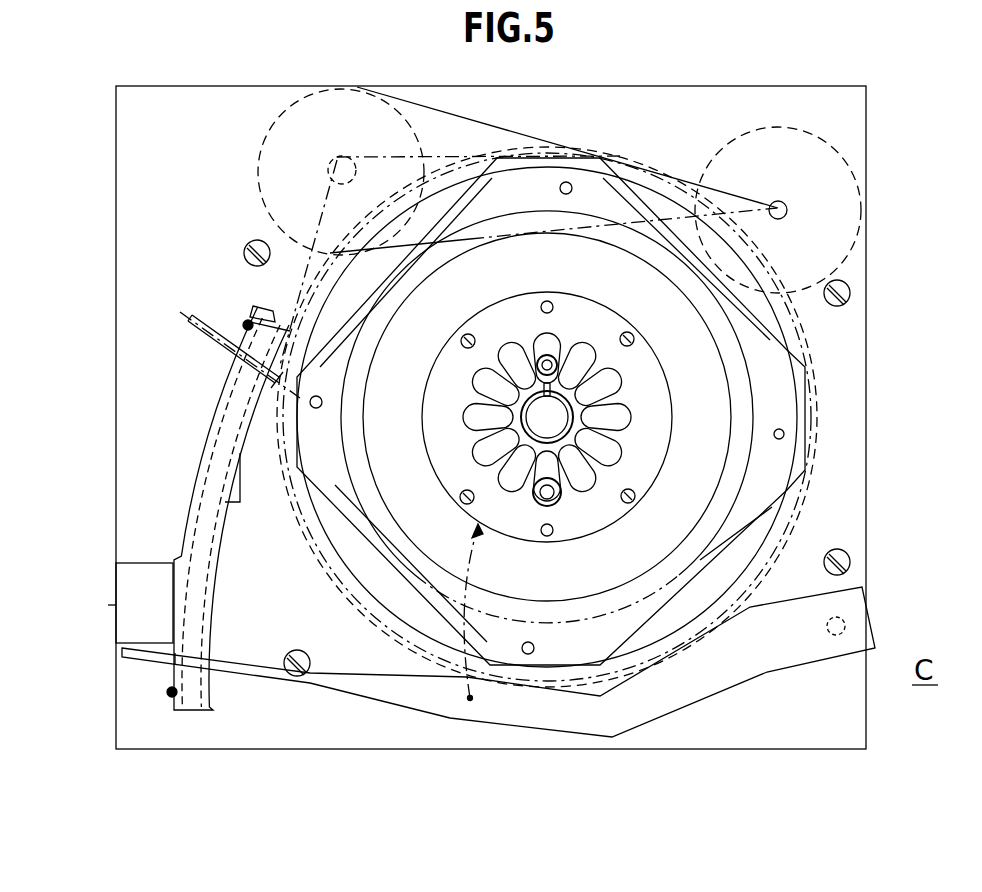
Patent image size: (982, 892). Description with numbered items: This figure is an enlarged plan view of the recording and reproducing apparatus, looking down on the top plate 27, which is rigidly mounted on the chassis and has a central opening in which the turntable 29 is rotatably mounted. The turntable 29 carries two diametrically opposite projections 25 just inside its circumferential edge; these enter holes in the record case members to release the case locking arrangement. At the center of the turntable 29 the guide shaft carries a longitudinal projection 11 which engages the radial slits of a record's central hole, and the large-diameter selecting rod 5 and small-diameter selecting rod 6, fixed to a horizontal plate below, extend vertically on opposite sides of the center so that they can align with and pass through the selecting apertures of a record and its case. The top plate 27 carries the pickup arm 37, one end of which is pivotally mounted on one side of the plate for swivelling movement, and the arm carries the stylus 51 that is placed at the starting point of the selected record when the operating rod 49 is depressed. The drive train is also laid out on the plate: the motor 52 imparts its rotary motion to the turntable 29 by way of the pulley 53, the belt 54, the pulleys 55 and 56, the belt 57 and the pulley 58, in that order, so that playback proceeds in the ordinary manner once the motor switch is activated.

The large-diameter selecting rod 5 is at (556, 492).
The small-diameter selecting rod 6 is at (552, 365).
The longitudinal projection 11 is at (560, 388).
The projection 25 is at (310, 402).
The top plate 27 is at (748, 744).
The turntable 29 is at (715, 453).
The pickup arm 37 is at (642, 712).
The operating rod 49 is at (108, 605).
The stylus 51 is at (468, 702).
The motor 52 is at (855, 173).
The pulley 53 is at (788, 215).
The belt 54 is at (723, 187).
The pulley 55 is at (268, 138).
The pulley 56 is at (336, 158).
The belt 57 is at (300, 290).
The pulley 58 is at (283, 482).